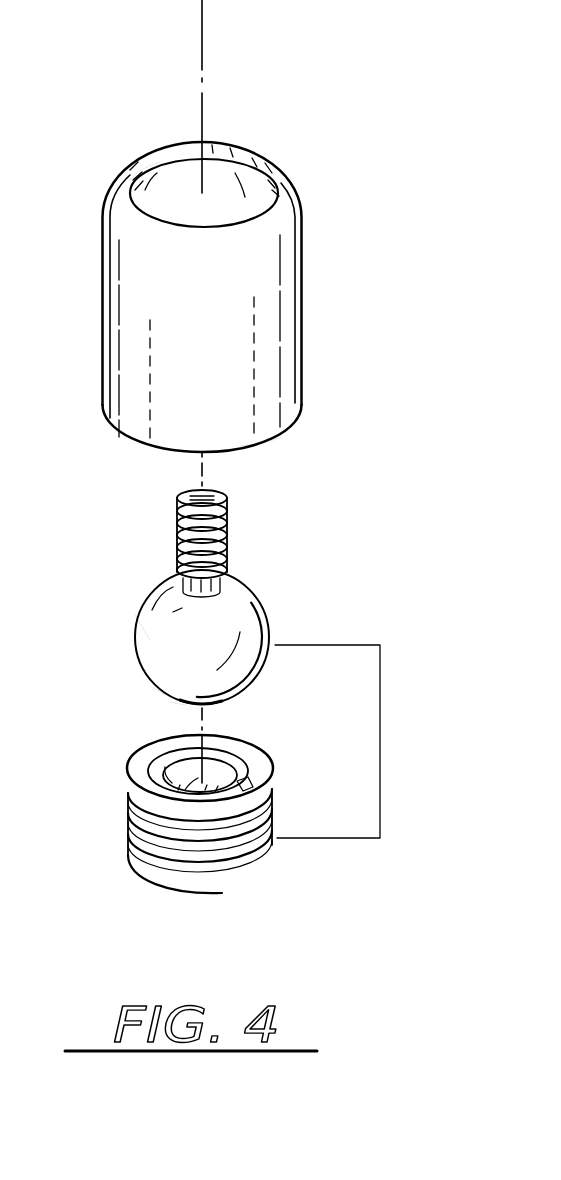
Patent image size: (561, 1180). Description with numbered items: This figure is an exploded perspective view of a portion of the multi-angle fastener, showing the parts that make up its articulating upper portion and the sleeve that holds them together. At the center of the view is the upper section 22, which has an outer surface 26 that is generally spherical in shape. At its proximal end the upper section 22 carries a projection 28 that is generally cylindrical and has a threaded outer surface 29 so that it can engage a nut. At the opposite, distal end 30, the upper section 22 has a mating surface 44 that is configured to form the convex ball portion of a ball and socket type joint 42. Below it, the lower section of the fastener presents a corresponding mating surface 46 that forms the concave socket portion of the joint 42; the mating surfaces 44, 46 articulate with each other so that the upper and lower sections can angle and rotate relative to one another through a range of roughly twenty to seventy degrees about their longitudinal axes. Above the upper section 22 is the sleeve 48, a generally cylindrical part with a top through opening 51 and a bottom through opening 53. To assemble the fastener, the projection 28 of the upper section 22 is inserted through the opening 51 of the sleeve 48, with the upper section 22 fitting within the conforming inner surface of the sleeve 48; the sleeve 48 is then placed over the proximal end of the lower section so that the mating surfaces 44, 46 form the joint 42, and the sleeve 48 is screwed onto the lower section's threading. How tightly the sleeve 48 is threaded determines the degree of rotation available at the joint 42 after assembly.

The upper section 22 is at (136, 615).
The outer surface 26 is at (253, 585).
The projection 28 is at (228, 525).
The threaded outer surface 29 is at (177, 547).
The distal end 30 is at (153, 687).
The joint 42 is at (383, 722).
The mating surface 44 is at (170, 702).
The mating surface 46 is at (228, 787).
The sleeve 48 is at (302, 292).
The top through opening 51 is at (177, 180).
The bottom through opening 53 is at (262, 445).